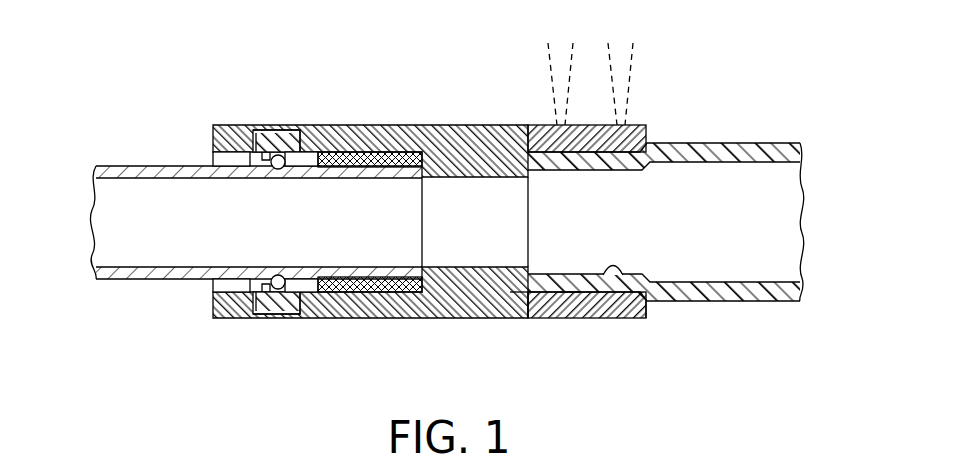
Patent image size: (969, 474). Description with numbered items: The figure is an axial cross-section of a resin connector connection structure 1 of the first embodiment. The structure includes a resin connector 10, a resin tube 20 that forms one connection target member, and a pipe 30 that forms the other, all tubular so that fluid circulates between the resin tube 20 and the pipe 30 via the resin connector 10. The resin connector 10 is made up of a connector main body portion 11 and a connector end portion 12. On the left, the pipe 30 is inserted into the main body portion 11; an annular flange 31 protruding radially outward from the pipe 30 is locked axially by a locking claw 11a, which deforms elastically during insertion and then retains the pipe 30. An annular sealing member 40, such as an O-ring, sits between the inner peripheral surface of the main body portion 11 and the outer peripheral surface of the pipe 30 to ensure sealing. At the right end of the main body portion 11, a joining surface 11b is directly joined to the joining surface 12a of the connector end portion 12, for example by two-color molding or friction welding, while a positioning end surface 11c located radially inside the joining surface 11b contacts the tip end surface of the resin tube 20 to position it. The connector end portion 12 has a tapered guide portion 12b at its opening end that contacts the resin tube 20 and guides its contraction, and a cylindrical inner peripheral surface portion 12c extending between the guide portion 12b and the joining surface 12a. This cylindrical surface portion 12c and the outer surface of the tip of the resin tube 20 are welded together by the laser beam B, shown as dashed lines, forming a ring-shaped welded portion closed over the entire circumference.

The resin connector connection structure 1 is at (780, 107).
The resin connector 10 is at (445, 48).
The connector main body portion 11 is at (447, 125).
The locking claw 11a is at (268, 130).
The joining surface 11b is at (515, 300).
The positioning end surface 11c is at (570, 288).
The connector end portion 12 is at (540, 125).
The joining surface 12a is at (530, 297).
The guide portion 12b is at (647, 292).
The cylindrical inner peripheral surface portion 12c is at (612, 268).
The resin tube 20 is at (757, 290).
The pipe 30 is at (122, 280).
The annular flange 31 is at (277, 291).
The sealing member 40 is at (392, 292).
The laser beam B is at (640, 68).